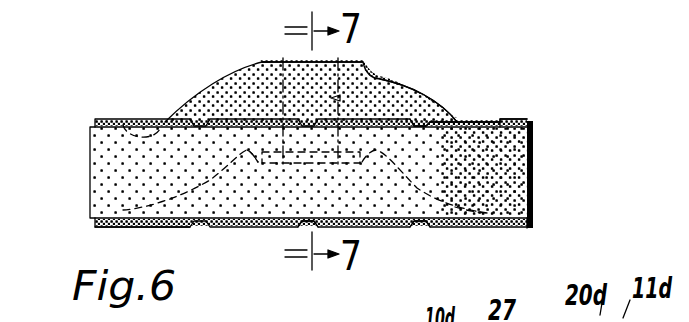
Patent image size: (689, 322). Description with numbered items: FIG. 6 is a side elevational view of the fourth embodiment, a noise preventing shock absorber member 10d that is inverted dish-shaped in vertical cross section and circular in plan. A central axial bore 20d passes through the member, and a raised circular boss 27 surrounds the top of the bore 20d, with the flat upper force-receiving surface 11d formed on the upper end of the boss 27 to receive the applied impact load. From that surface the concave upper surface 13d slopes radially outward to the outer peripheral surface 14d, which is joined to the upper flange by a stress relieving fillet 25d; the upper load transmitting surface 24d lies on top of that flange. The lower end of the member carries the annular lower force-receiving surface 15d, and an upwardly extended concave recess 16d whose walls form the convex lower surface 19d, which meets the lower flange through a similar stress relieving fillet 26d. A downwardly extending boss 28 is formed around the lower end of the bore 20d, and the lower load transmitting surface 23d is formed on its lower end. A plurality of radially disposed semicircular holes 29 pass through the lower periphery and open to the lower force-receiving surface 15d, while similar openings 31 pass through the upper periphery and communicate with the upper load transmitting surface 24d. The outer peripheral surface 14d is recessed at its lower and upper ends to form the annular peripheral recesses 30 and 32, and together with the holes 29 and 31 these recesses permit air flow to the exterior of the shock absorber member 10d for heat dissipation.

The shock absorber member 10d is at (210, 78).
The upper force-receiving surface 11d is at (352, 62).
The upper surface 13d is at (415, 88).
The outer peripheral surface 14d is at (533, 168).
The lower force-receiving surface 15d is at (104, 228).
The recess 16d is at (257, 205).
The lower surface 19d is at (412, 190).
The bore 20d is at (343, 98).
The lower load transmitting surface 23d is at (325, 165).
The upper load transmitting surface 24d is at (500, 126).
The stress relieving fillet 25d is at (136, 122).
The stress relieving fillet 26d is at (497, 213).
The raised circular boss 27 is at (264, 70).
The downwardly extending boss 28 is at (261, 161).
The semicircular holes 29 is at (416, 229).
The lower annular peripheral recess 30 is at (530, 223).
The openings 31 is at (427, 128).
The upper annular peripheral recess 32 is at (530, 127).